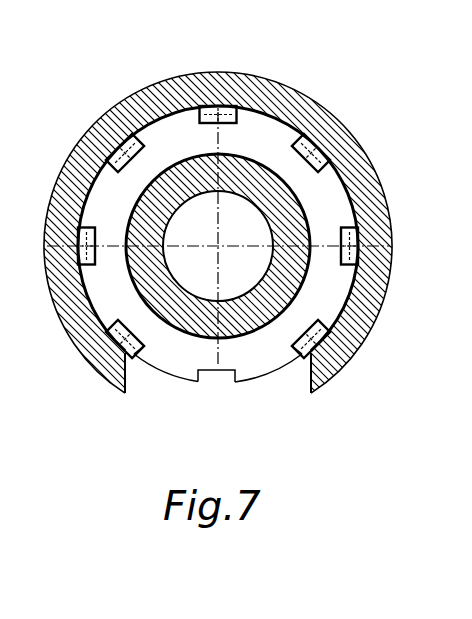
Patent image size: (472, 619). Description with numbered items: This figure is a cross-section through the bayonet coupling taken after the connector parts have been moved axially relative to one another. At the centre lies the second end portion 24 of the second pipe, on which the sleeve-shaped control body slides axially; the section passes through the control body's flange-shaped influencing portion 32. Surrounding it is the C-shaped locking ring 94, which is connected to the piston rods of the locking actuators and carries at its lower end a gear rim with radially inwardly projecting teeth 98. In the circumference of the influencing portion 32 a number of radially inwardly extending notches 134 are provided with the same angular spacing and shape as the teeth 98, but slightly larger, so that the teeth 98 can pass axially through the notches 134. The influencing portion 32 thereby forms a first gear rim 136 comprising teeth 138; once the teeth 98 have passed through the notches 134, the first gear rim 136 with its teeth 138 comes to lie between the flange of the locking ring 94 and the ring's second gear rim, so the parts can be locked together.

The second end portion 24 is at (290, 213).
The influencing portion 32 is at (255, 132).
The locking ring 94 is at (177, 88).
The teeth 98 is at (106, 125).
The notches 134 is at (213, 378).
The first gear rim 136 is at (279, 396).
The teeth 138 is at (172, 363).